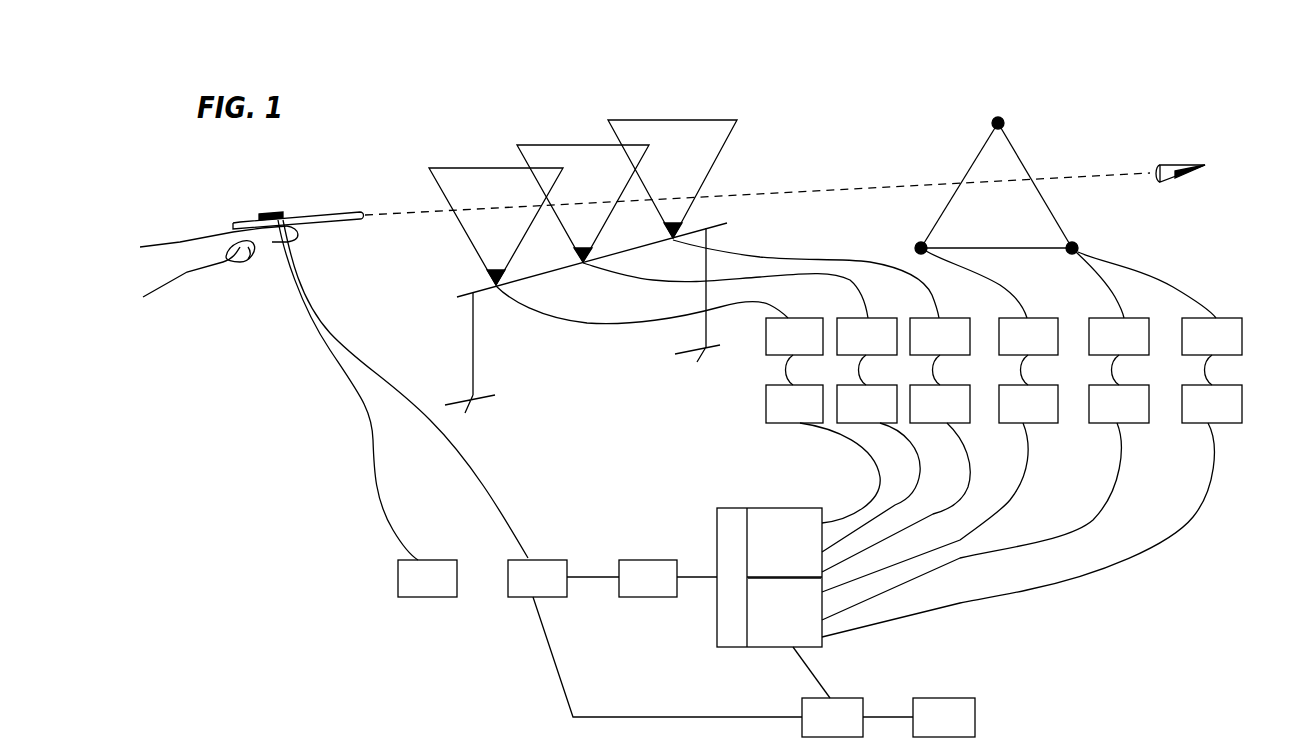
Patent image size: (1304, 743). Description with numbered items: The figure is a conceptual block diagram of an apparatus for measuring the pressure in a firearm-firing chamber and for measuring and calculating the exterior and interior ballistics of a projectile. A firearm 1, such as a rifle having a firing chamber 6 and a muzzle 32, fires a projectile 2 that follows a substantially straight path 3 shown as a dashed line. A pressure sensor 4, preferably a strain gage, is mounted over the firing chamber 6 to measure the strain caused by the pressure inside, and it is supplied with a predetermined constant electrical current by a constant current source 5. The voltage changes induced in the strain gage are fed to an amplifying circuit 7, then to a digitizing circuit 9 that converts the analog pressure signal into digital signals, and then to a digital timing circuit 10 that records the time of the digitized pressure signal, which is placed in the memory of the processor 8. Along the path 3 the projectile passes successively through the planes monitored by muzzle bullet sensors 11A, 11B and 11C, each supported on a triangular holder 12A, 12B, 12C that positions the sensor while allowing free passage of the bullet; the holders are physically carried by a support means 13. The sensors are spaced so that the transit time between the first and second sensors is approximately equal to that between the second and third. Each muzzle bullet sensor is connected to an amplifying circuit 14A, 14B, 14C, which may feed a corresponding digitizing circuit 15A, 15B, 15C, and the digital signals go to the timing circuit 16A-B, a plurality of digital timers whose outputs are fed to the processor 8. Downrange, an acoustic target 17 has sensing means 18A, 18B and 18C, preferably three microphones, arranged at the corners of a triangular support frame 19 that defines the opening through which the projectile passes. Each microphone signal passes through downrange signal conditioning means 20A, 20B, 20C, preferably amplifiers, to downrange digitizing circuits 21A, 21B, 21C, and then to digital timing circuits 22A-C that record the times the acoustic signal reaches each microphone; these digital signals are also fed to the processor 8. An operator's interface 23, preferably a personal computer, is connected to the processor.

The firearm 1 is at (160, 241).
The projectile 2 is at (1178, 166).
The path 3 is at (820, 188).
The pressure sensor 4 is at (268, 213).
The means for supplying a predetermined constant electrical current 5 is at (427, 578).
The firing chamber 6 is at (273, 228).
The amplifying circuit 7 is at (655, 638).
The processor 8 is at (853, 692).
The digitizing circuit 9 is at (668, 578).
The digital timing circuit 10 is at (769, 577).
The first muzzle bullet sensor 11A is at (503, 273).
The second muzzle bullet sensor 11B is at (588, 255).
The third muzzle bullet sensor 11C is at (680, 230).
The holder 12A is at (450, 168).
The holder 12B is at (537, 145).
The holder 12C is at (628, 120).
The support means 13 is at (550, 277).
The amplifying circuit 14A is at (794, 336).
The amplifying circuit 14B is at (867, 336).
The amplifying circuit 14C is at (940, 336).
The digitizing circuit 15A is at (823, 454).
The digitizing circuit 15B is at (871, 468).
The digitizing circuit 15C is at (896, 478).
The timing circuit 16A-B is at (784, 553).
The downrange acoustic target 17 is at (1027, 170).
The sensing means 18A is at (973, 277).
The sensing means 18B is at (1141, 273).
The sensing means 18C is at (1018, 112).
The triangular support frame 19 is at (967, 168).
The downrange signal conditioning means 20A is at (1028, 336).
The downrange signal conditioning means 20B is at (1119, 336).
The downrange signal conditioning means 20C is at (1212, 336).
The downrange digitizing circuit 21A is at (940, 488).
The downrange digitizing circuit 21B is at (985, 502).
The downrange digitizing circuit 21C is at (1032, 511).
The digital timing circuits 22A-C is at (784, 600).
The operator's interface 23 is at (944, 717).
The muzzle 32 is at (360, 212).